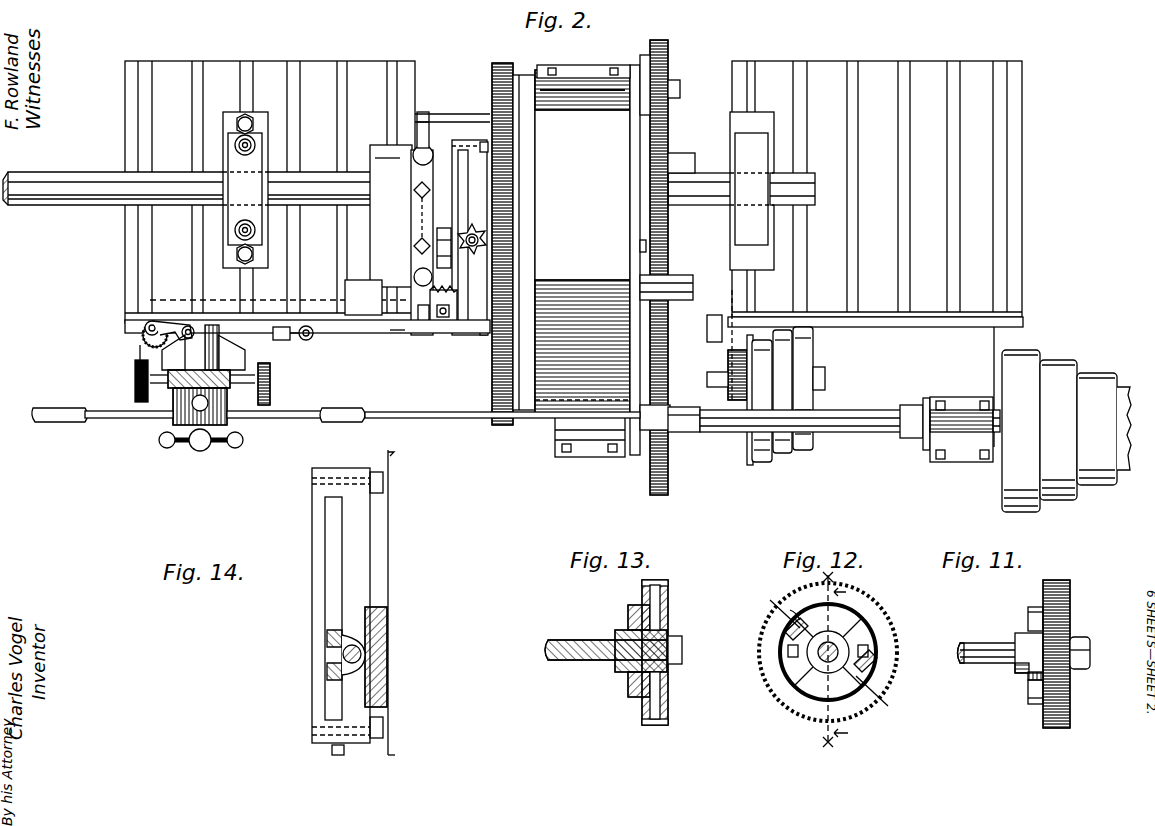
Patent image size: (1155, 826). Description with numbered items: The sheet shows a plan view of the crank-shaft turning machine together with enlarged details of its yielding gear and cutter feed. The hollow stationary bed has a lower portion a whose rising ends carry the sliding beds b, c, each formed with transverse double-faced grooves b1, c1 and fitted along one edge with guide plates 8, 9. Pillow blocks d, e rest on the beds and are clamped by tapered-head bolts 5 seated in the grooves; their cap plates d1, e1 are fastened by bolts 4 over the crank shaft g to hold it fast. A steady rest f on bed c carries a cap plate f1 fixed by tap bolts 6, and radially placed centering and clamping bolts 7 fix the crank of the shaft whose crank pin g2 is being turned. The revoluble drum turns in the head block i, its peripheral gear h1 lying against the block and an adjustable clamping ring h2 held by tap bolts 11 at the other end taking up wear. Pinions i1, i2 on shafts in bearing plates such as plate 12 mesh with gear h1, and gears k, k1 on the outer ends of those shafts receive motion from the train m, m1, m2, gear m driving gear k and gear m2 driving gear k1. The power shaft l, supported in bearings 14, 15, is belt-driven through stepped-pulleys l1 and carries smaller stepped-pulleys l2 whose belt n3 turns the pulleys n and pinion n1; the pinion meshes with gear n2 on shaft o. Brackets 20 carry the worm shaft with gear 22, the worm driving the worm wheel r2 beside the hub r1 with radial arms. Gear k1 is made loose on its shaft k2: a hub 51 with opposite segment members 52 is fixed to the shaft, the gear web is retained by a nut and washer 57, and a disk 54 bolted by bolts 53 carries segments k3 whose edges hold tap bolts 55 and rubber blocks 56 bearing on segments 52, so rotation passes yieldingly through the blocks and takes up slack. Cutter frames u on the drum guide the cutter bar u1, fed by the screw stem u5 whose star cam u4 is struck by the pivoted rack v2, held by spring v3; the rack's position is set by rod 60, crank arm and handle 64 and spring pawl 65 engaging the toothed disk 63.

In FIG. 2, the lower portion of the main stationary bed a is at (574, 382).
In FIG. 2, the sliding bed b is at (877, 189).
In FIG. 2, the transverse double-faced grooves b1 is at (950, 240).
In FIG. 2, the sliding bed c is at (270, 192).
In FIG. 2, the transverse double-faced grooves c1 is at (195, 145).
In FIG. 2, the pillow block d is at (776, 170).
In FIG. 2, the cap plate d1 is at (752, 189).
In FIG. 2, the pillow block e is at (224, 118).
In FIG. 2, the cap plate e1 is at (245, 189).
In FIG. 2, the steady rest f is at (372, 218).
In FIG. 2, the cap plate of steady rest f1 is at (412, 222).
In FIG. 2, the crank shaft g is at (96, 170).
In FIG. 2, the crank pin g2 is at (443, 228).
In FIG. 2, the peripheral gear of the drum h1 is at (520, 168).
In FIG. 2, the adjustable clamping ring h2 is at (632, 236).
In FIG. 2, the head block i is at (582, 243).
In FIG. 2, the pinion i1 is at (502, 426).
In FIG. 2, the pinion i2 is at (502, 63).
In FIG. 2, the gear k is at (660, 388).
In FIG. 2, the gear k1 is at (669, 52).
In FIG. 13, the gear k1 is at (666, 595).
In FIG. 12, the gear k1 is at (890, 660).
In FIG. 11, the gear k1 is at (1070, 620).
In FIG. 13, the shaft of gear k1 k2 is at (571, 640).
In FIG. 12, the shaft of gear k1 k2 is at (848, 630).
In FIG. 11, the shaft of gear k1 k2 is at (988, 643).
In FIG. 12, the segments k3 is at (790, 662).
In FIG. 11, the segments k3 is at (1030, 645).
In FIG. 2, the power shaft l is at (865, 420).
In FIG. 2, the stepped-pulleys l1 is at (1058, 362).
In FIG. 2, the smaller stepped-pulleys l2 is at (783, 454).
In FIG. 2, the gear wheel m is at (669, 478).
In FIG. 2, the gear m1 is at (670, 264).
In FIG. 2, the gear m2 is at (668, 212).
In FIG. 2, the stepped-pulleys n is at (813, 352).
In FIG. 2, the pinion n1 is at (740, 398).
In FIG. 2, the gear n2 is at (728, 358).
In FIG. 2, the belt n3 is at (762, 463).
In FIG. 2, the shaft o is at (398, 334).
In FIG. 2, the hub with radial arms r1 is at (195, 415).
In FIG. 2, the worm wheel r2 is at (180, 386).
In FIG. 2, the cutter frames u is at (470, 237).
In FIG. 14, the cutter frames u is at (353, 602).
In FIG. 2, the cutter bar u1 is at (460, 168).
In FIG. 14, the cutter bar u1 is at (332, 585).
In FIG. 2, the star cam u4 is at (485, 224).
In FIG. 2, the screw stem u5 is at (466, 240).
In FIG. 14, the screw stem u5 is at (352, 645).
In FIG. 2, the pivoted rack v2 is at (458, 318).
In FIG. 2, the spring v3 is at (415, 330).
In FIG. 2, the bolts 4 is at (498, 188).
In FIG. 2, the bolts with tapering heads 5 is at (249, 120).
In FIG. 2, the tap bolts 6 is at (428, 215).
In FIG. 2, the centering and clamping bolts 7 is at (424, 114).
In FIG. 2, the guide plate 8 is at (900, 328).
In FIG. 2, the guide plate 9 is at (315, 318).
In FIG. 2, the tap bolts 11 is at (638, 260).
In FIG. 2, the bearing plate 12 is at (572, 65).
In FIG. 2, the bearing 14 is at (961, 420).
In FIG. 2, the bearing 15 is at (598, 437).
In FIG. 2, the brackets 20 is at (211, 406).
In FIG. 2, the gear 22 is at (270, 388).
In FIG. 13, the hub 51 is at (615, 672).
In FIG. 12, the hub 51 is at (832, 664).
In FIG. 11, the hub 51 is at (1018, 673).
In FIG. 2, the segment members 52 is at (645, 72).
In FIG. 13, the segment members 52 is at (628, 614).
In FIG. 12, the segment members 52 is at (828, 650).
In FIG. 11, the segment members 52 is at (1035, 612).
In FIG. 12, the bolts 53 is at (788, 650).
In FIG. 13, the disk 54 is at (645, 700).
In FIG. 12, the disk 54 is at (792, 620).
In FIG. 12, the tap bolts 55 is at (833, 650).
In FIG. 11, the tap bolts 55 is at (1030, 678).
In FIG. 12, the rubber blocks 56 is at (786, 690).
In FIG. 11, the rubber blocks 56 is at (1036, 612).
In FIG. 2, the nut and washer 57 is at (672, 92).
In FIG. 13, the nut and washer 57 is at (676, 638).
In FIG. 11, the nut and washer 57 is at (1080, 670).
In FIG. 2, the rod 60 is at (145, 327).
In FIG. 2, the disk with rack teeth 63 is at (142, 333).
In FIG. 2, the crank arm and handle 64 is at (186, 326).
In FIG. 2, the spring pawl 65 is at (150, 346).